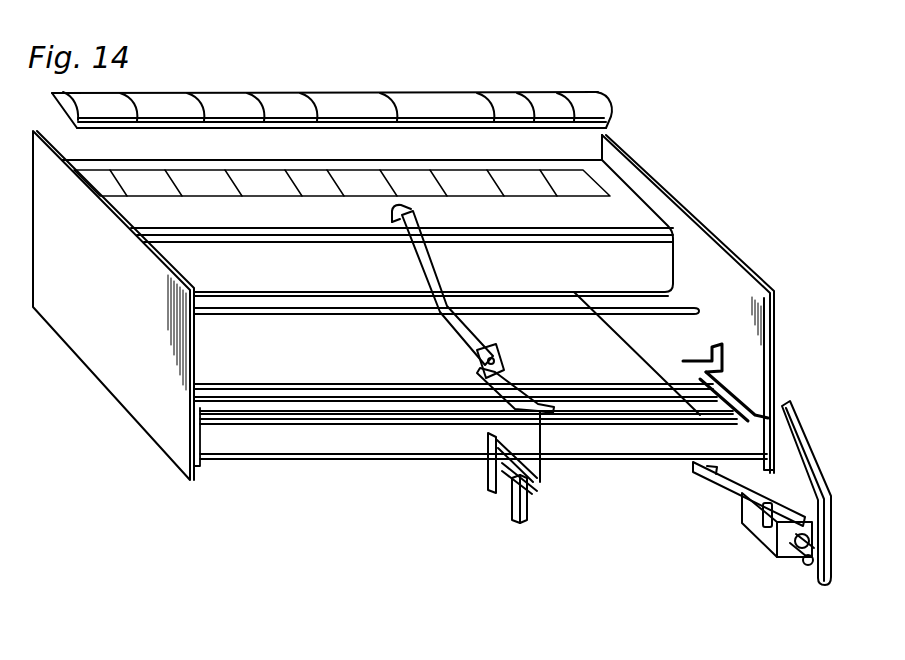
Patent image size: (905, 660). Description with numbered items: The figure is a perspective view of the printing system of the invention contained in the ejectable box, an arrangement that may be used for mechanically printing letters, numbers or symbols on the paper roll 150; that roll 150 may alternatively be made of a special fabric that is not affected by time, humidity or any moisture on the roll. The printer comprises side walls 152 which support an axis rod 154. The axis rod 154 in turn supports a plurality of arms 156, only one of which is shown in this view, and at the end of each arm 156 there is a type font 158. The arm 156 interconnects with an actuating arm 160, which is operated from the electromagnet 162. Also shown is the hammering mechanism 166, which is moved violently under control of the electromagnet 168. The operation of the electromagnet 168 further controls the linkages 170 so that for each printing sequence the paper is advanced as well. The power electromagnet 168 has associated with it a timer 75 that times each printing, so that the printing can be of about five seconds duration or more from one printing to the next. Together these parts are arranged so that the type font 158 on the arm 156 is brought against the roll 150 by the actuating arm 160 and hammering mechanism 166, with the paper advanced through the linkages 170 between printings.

The cover roll 75 is at (333, 98).
The paper roll 150 is at (653, 227).
The side walls 152 is at (112, 387).
The axis rod 154 is at (345, 314).
The arm 156 is at (433, 267).
The type font 158 is at (388, 221).
The actuating arm 160 is at (504, 371).
The electromagnet 162 is at (509, 509).
The hammering mechanism 166 is at (764, 446).
The electromagnet 168 is at (760, 533).
The linkages 170 is at (803, 418).